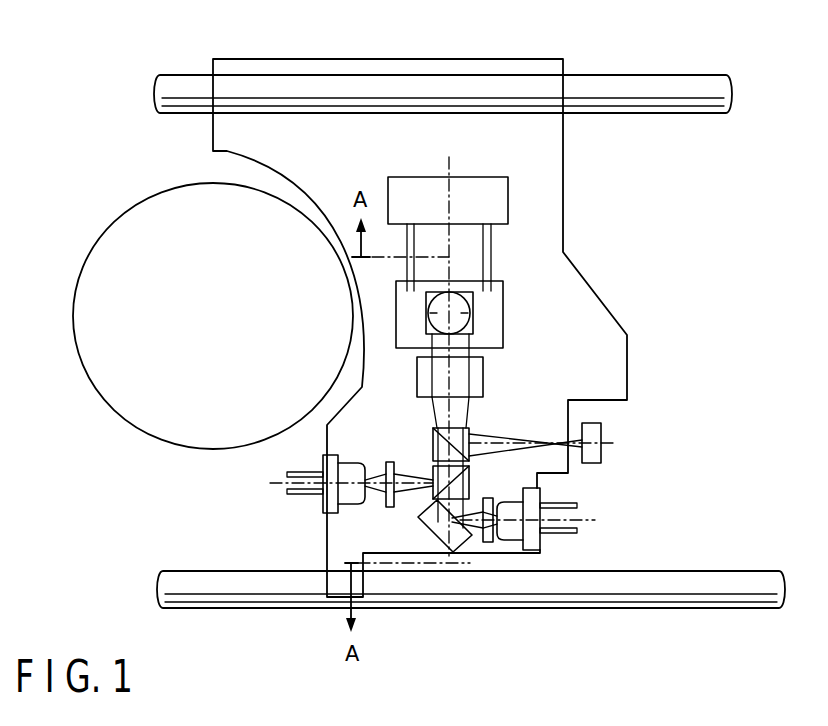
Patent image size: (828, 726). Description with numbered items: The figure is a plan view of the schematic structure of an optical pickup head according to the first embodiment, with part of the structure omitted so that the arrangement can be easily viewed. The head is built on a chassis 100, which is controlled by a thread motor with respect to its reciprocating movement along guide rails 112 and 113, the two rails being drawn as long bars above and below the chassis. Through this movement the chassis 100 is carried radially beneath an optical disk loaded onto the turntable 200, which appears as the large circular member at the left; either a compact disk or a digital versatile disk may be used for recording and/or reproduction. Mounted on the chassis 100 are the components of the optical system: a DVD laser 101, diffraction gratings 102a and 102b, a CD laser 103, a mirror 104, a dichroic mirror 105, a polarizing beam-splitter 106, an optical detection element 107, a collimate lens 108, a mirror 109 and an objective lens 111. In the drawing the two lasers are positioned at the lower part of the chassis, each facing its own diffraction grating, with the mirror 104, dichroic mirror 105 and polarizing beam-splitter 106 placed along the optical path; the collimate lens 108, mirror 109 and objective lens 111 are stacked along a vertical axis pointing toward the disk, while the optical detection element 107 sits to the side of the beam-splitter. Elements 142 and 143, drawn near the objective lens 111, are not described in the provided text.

The chassis 100 is at (488, 57).
The guide rail 112 is at (650, 74).
The guide rail 113 is at (735, 570).
The turntable 200 is at (147, 195).
The objective lens actuator 143 is at (486, 176).
The suspension wires 142 is at (495, 262).
The objective lens 111 is at (479, 303).
The mirror 109 is at (491, 323).
The collimate lens 108 is at (484, 372).
The polarizing beam-splitter (PBS) 106 is at (423, 443).
The dichroic mirror 105 is at (492, 473).
The optical detection element (PDIC) 107 is at (616, 431).
The CD laser 103 is at (315, 490).
The diffraction grating 102b is at (366, 511).
The DVD laser 101 is at (548, 530).
The diffraction grating 102a is at (490, 557).
The mirror 104 is at (425, 530).